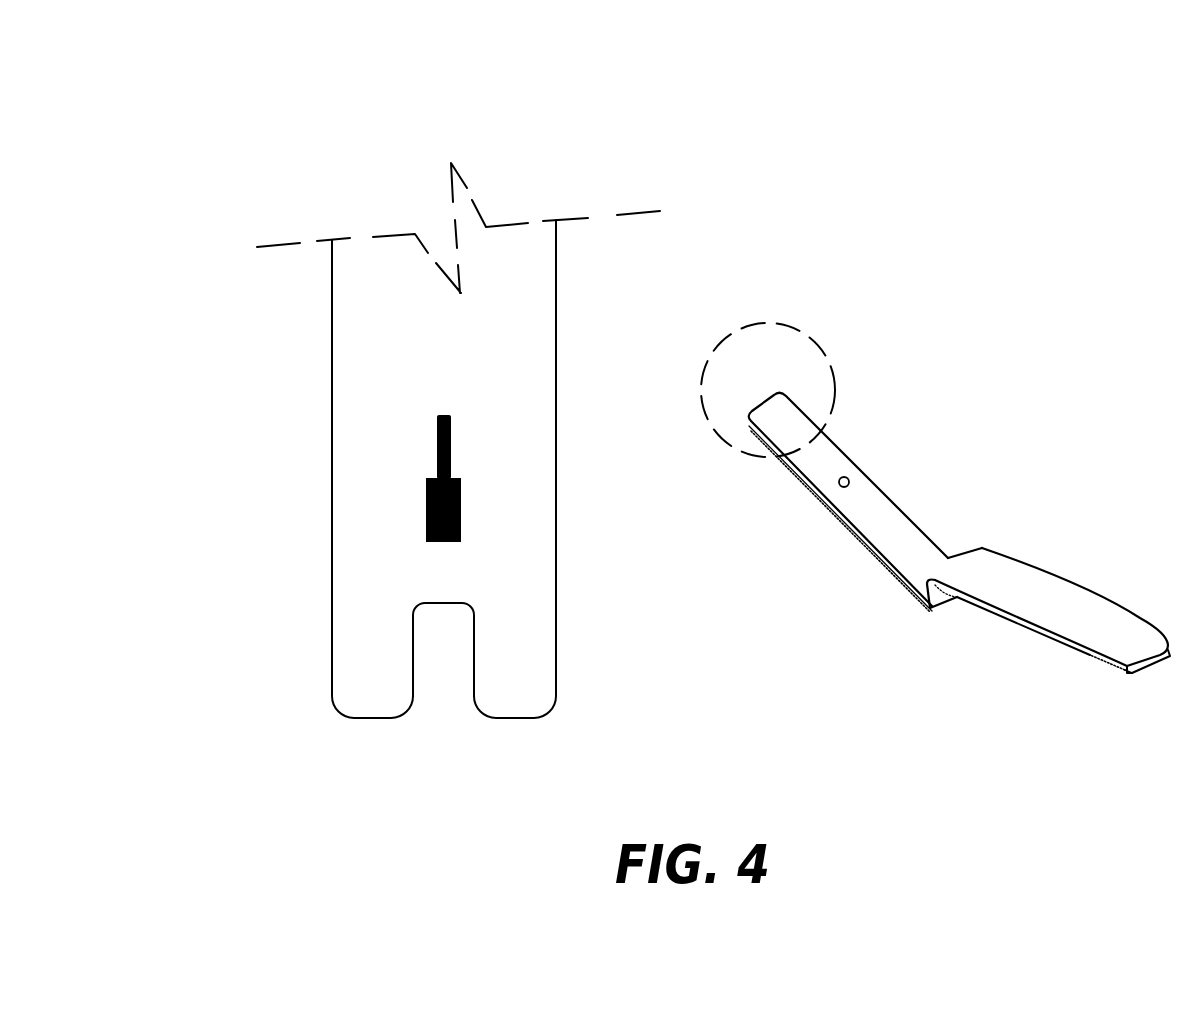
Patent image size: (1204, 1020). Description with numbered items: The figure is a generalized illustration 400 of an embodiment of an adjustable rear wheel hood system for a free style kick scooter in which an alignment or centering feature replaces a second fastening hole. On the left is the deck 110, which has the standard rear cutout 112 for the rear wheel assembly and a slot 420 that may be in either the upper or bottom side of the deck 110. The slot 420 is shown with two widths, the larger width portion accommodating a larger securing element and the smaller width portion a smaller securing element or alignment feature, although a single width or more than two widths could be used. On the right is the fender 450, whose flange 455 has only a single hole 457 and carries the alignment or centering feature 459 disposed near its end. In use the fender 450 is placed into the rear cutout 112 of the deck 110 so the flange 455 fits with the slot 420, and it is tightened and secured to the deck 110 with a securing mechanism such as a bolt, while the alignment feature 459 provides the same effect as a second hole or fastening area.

The generalized illustration 400 is at (212, 69).
The deck 110 is at (385, 298).
The rear cutout 112 is at (438, 720).
The slot 420 is at (452, 430).
The fender 450 is at (916, 464).
The flange 455 is at (948, 558).
The hole 457 is at (839, 483).
The alignment feature 459 is at (845, 332).